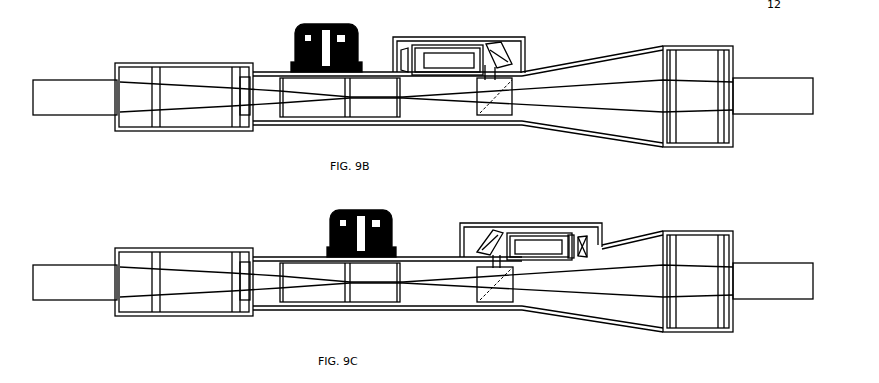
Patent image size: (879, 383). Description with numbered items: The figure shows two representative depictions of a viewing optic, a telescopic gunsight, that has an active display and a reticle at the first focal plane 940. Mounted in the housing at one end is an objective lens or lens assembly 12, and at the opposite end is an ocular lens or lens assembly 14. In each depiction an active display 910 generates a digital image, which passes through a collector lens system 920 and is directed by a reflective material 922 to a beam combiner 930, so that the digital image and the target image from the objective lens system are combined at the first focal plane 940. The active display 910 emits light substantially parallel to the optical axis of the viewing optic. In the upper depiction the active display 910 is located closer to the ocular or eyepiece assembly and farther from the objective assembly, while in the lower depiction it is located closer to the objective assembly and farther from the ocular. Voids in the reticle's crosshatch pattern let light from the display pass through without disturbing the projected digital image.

In FIG. 9B, the objective lens assembly 12 is at (740, 146).
In FIG. 9C, the objective lens assembly 12 is at (738, 332).
In FIG. 9B, the ocular lens assembly 14 is at (110, 134).
In FIG. 9C, the ocular lens assembly 14 is at (107, 318).
In FIG. 9B, the active display 910 is at (400, 36).
In FIG. 9C, the active display 910 is at (596, 226).
In FIG. 9B, the collector lens system 920 is at (432, 37).
In FIG. 9C, the collector lens system 920 is at (567, 232).
In FIG. 9B, the reflective material 922 is at (512, 38).
In FIG. 9C, the reflective material 922 is at (490, 228).
In FIG. 9B, the beam combiner 930 is at (490, 116).
In FIG. 9C, the beam combiner 930 is at (500, 304).
In FIG. 9B, the first focal plane 940 is at (403, 126).